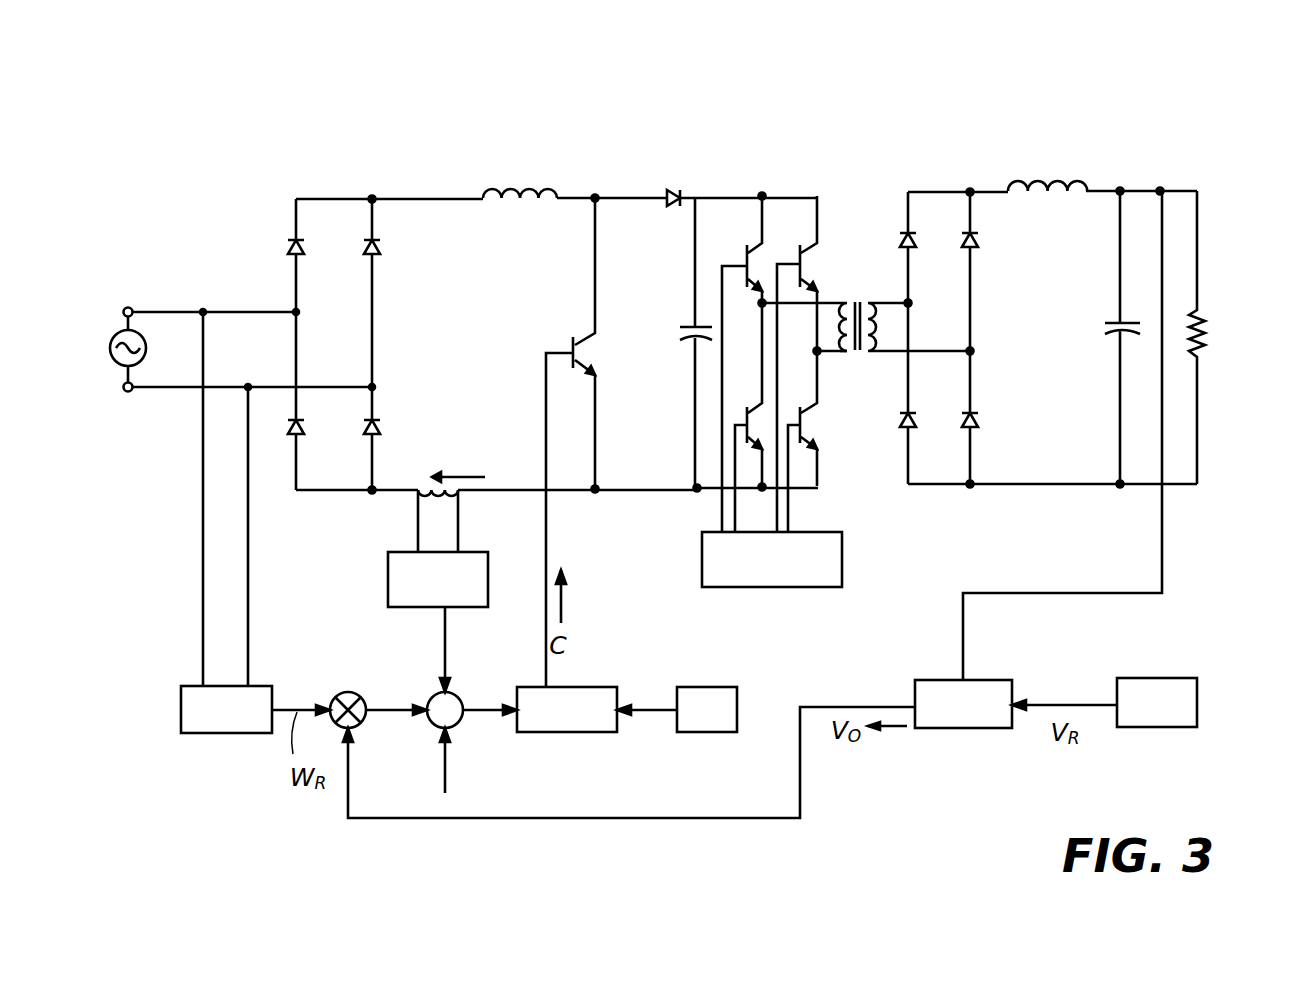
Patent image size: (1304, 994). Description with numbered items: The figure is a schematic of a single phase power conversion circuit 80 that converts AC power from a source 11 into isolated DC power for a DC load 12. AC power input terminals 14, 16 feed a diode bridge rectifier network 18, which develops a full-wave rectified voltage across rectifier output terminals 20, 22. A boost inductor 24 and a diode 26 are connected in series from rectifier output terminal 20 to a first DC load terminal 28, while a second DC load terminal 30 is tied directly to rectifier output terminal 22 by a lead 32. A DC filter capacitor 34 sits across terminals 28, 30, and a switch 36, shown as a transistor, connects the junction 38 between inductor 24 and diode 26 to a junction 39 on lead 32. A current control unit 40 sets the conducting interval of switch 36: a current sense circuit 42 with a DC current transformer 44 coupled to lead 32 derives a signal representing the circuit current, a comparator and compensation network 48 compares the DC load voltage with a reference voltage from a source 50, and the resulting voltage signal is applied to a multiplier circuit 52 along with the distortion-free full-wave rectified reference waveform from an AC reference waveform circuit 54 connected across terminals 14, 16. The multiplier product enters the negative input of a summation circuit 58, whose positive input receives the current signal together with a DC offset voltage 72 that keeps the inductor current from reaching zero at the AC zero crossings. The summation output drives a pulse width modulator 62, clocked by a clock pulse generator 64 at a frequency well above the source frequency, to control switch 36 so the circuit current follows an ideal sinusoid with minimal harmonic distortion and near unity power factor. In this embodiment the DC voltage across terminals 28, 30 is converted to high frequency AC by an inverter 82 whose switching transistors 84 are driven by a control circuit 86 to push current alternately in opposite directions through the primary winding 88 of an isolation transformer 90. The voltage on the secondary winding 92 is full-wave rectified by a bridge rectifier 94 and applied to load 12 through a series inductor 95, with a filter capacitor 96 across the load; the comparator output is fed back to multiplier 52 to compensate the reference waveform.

The source 11 is at (147, 344).
The AC power input terminal 14 is at (130, 306).
The AC power input terminal 16 is at (130, 392).
The diode bridge rectifier network 18 is at (334, 344).
The rectifier output terminal 20 is at (372, 196).
The rectifier output terminal 22 is at (370, 493).
The boost inductor 24 is at (539, 196).
The diode 26 is at (684, 193).
The first DC load terminal 28 is at (762, 193).
The second DC load terminal 30 is at (766, 490).
The lead 32 is at (660, 491).
The DC filter capacitor 34 is at (681, 324).
The switch 36 is at (572, 341).
The junction 38 is at (595, 195).
The junction 39 is at (598, 486).
The current control unit 40 is at (575, 823).
The current sense circuit 42 is at (438, 622).
The DC current transformer 44 is at (415, 468).
The comparator and compensation network 48 is at (1015, 460).
The source 50 is at (1104, 702).
The multiplier circuit 52 is at (348, 692).
The AC reference waveform circuit 54 is at (255, 709).
The summation circuit 58 is at (460, 696).
The pulse width modulator 62 is at (567, 709).
The clock pulse generator 64 is at (677, 709).
The DC offset voltage 72 is at (463, 762).
The power conversion circuit 80 is at (900, 128).
The inverter 82 is at (846, 425).
The switching transistors 84 is at (745, 250).
The control circuit 86 is at (772, 559).
The primary winding 88 is at (839, 353).
The isolation transformer 90 is at (904, 310).
The secondary winding 92 is at (873, 353).
The bridge rectifier 94 is at (992, 306).
The series inductor 95 is at (1053, 189).
The filter capacitor 96 is at (1107, 323).
The load 12 is at (1205, 342).